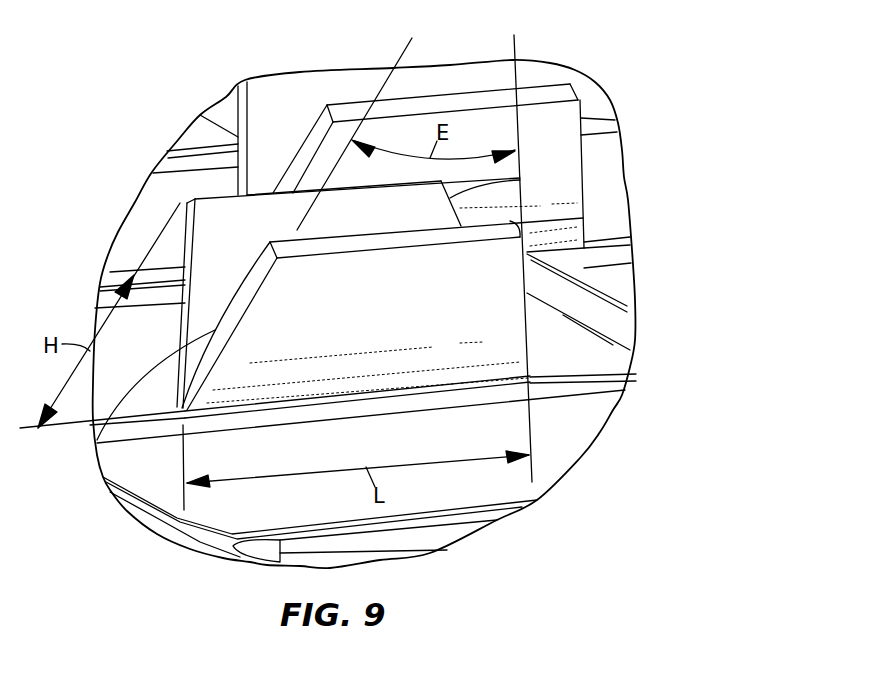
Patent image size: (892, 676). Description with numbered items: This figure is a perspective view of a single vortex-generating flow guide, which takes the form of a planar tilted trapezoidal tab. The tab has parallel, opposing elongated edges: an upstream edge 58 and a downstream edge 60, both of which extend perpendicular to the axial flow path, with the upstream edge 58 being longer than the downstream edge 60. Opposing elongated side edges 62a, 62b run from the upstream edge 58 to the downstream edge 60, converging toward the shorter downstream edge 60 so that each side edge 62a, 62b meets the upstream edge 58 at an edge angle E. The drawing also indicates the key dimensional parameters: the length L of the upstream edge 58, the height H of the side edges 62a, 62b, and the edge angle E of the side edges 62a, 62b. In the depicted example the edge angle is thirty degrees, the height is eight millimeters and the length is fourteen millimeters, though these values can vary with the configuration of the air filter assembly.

The upstream edge 58 is at (487, 390).
The downstream edge 60 is at (585, 219).
The side edge 62a is at (182, 240).
The side edge 62b is at (441, 181).